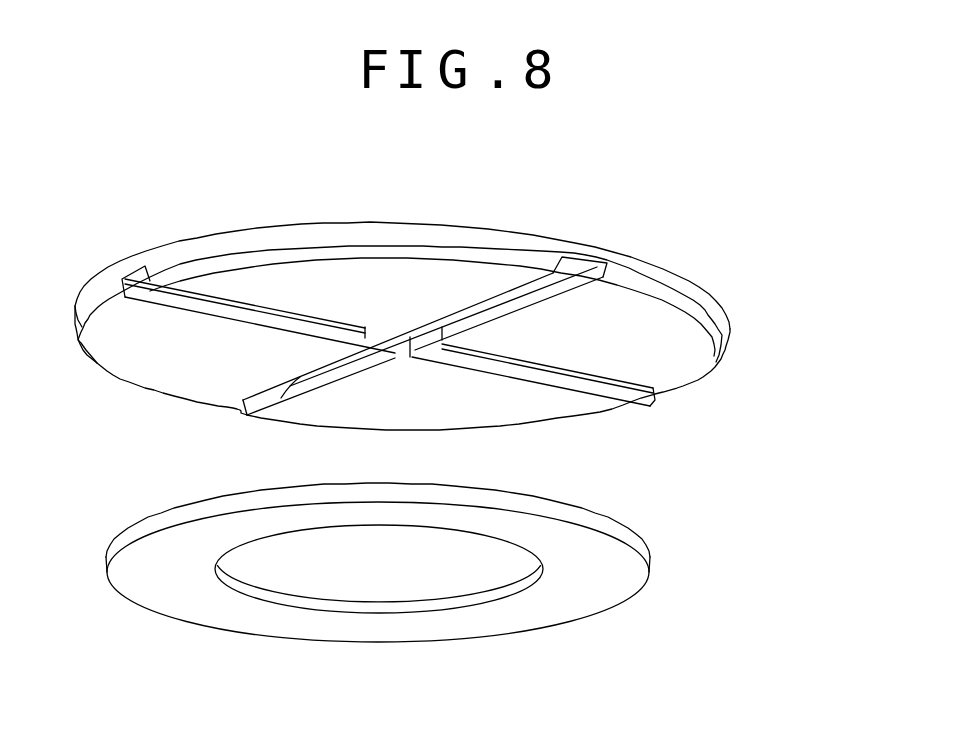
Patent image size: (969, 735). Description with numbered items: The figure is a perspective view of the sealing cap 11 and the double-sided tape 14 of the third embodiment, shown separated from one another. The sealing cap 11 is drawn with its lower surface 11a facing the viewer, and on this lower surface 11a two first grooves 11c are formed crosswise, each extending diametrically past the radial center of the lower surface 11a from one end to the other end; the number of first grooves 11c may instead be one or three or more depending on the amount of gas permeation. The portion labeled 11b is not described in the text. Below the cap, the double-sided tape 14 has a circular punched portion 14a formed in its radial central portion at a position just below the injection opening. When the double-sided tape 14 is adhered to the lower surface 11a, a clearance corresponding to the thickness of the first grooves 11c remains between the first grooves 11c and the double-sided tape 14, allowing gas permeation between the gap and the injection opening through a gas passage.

The sealing cap 11 is at (450, 325).
The lower surface of the sealing cap 11a is at (657, 313).
The outer wall of holder ring 11b is at (640, 270).
The first grooves 11c is at (122, 271).
The double-sided tape 14 is at (362, 587).
The circular punched portion 14a is at (375, 604).